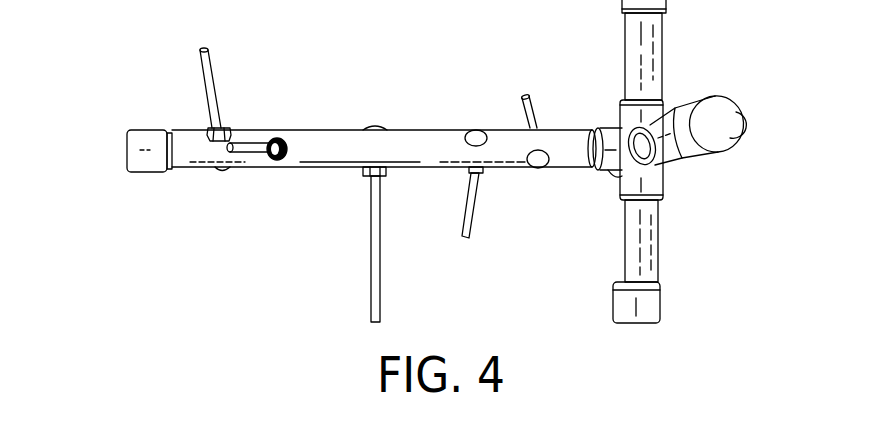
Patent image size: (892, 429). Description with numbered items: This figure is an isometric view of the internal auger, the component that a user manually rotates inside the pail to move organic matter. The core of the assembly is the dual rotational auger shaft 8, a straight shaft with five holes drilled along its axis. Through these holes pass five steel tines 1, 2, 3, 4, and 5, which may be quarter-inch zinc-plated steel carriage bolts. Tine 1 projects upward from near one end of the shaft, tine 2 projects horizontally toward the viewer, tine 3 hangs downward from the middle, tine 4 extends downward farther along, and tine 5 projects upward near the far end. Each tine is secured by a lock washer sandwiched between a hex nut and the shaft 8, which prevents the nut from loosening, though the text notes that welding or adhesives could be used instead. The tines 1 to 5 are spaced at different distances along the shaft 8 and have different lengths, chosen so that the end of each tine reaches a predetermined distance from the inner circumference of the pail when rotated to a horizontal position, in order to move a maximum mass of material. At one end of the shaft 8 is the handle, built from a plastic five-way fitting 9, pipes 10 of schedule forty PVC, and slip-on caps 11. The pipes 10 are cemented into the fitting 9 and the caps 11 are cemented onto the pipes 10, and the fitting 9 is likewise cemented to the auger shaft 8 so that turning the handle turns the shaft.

The tine 1 is at (205, 77).
The tine 2 is at (240, 152).
The tine 3 is at (371, 297).
The tine 4 is at (469, 238).
The tine 5 is at (530, 110).
The dual rotational auger shaft 8 is at (403, 138).
The five-way fitting 9 is at (622, 180).
The pipes 10 is at (650, 37).
The slip-on caps 11 is at (133, 150).